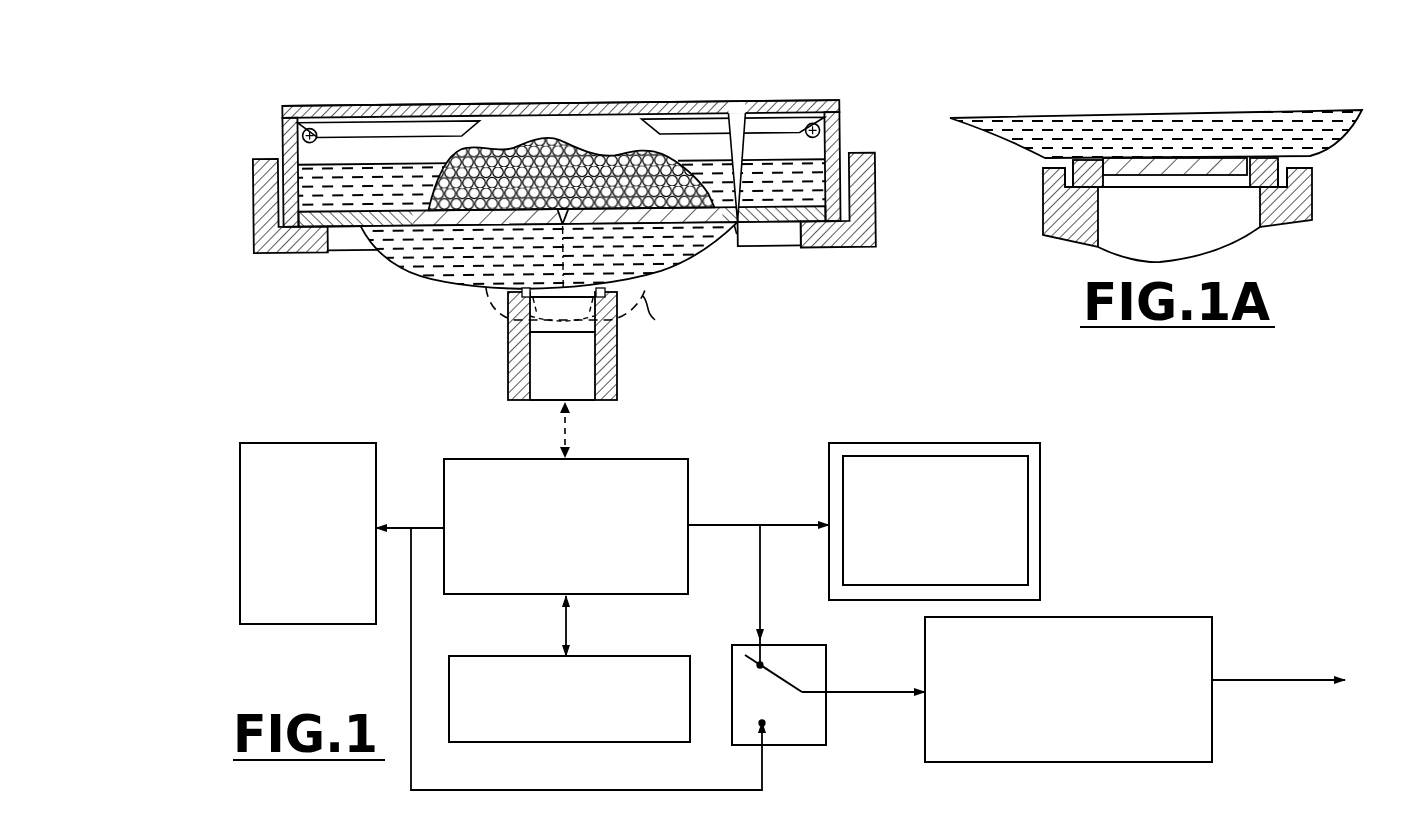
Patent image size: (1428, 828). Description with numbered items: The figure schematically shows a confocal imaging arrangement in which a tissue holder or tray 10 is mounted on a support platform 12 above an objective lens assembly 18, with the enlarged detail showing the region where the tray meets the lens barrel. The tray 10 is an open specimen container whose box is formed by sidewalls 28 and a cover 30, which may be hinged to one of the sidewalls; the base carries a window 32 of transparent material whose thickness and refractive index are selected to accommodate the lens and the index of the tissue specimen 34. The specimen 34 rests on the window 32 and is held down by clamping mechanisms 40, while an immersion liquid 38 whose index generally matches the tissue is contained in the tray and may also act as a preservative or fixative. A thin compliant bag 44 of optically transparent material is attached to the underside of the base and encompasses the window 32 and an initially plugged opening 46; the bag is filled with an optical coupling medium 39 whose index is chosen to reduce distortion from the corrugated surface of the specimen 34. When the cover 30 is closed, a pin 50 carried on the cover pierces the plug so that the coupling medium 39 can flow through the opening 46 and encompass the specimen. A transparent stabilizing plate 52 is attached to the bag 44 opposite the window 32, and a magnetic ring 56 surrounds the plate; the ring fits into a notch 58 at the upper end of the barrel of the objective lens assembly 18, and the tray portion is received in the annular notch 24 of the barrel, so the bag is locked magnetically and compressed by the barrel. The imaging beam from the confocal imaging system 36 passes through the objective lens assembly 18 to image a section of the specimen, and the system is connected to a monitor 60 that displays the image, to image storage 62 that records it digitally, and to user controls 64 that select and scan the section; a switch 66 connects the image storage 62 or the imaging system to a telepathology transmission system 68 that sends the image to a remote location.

In FIG. 1, the tissue holder or tray 10 is at (812, 90).
In FIG. 1, the support platform 12 is at (876, 190).
In FIG. 1, the objective lens assembly 18 is at (620, 368).
In FIG. 1A, the annular notch 24 is at (1310, 198).
In FIG. 1, the sidewalls 28 is at (843, 117).
In FIG. 1, the cover 30 is at (565, 105).
In FIG. 1, the window 32 is at (458, 226).
In FIG. 1, the tissue specimen 34 is at (514, 153).
In FIG. 1, the confocal imaging system 36 is at (648, 462).
In FIG. 1, the immersion liquid 38 is at (256, 193).
In FIG. 1, the optical coupling medium 39 is at (660, 227).
In FIG. 1, the clamping mechanisms 40 is at (343, 132).
In FIG. 1A, the compliant bag 44 is at (1330, 128).
In FIG. 1, the opening 46 is at (780, 226).
In FIG. 1, the pin 50 is at (733, 118).
In FIG. 1A, the stabilizing plate 52 is at (1167, 162).
In FIG. 1A, the magnetic ring 56 is at (1268, 160).
In FIG. 1A, the notch 58 is at (1040, 183).
In FIG. 1, the monitor or display 60 is at (1016, 502).
In FIG. 1, the image storage 62 is at (326, 455).
In FIG. 1, the user controls 64 is at (638, 662).
In FIG. 1, the switch 66 is at (792, 736).
In FIG. 1, the telepathology transmission system 68 is at (1187, 626).